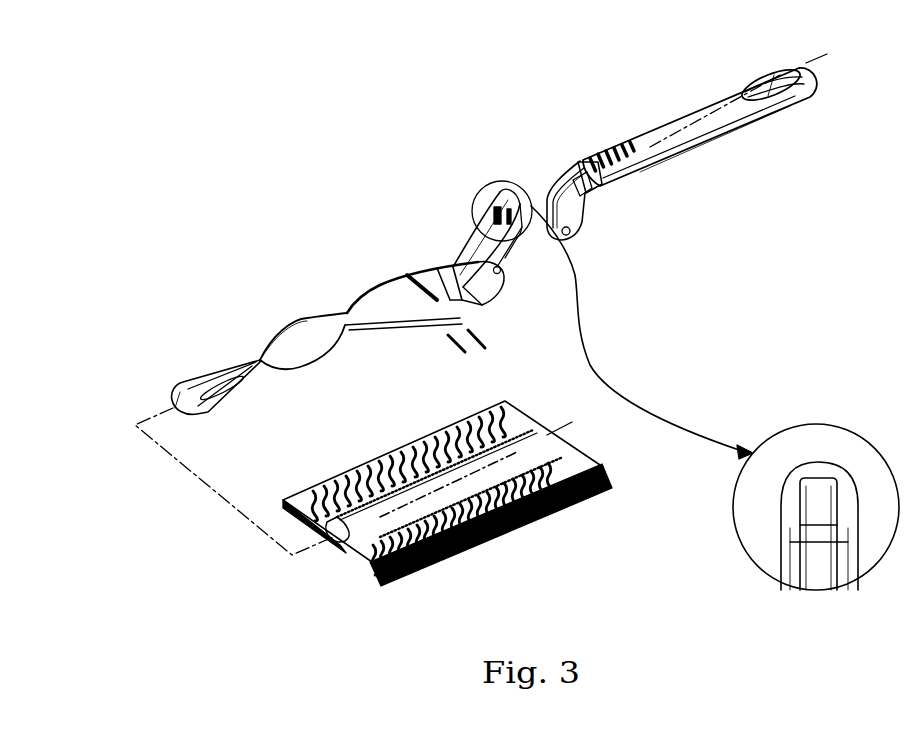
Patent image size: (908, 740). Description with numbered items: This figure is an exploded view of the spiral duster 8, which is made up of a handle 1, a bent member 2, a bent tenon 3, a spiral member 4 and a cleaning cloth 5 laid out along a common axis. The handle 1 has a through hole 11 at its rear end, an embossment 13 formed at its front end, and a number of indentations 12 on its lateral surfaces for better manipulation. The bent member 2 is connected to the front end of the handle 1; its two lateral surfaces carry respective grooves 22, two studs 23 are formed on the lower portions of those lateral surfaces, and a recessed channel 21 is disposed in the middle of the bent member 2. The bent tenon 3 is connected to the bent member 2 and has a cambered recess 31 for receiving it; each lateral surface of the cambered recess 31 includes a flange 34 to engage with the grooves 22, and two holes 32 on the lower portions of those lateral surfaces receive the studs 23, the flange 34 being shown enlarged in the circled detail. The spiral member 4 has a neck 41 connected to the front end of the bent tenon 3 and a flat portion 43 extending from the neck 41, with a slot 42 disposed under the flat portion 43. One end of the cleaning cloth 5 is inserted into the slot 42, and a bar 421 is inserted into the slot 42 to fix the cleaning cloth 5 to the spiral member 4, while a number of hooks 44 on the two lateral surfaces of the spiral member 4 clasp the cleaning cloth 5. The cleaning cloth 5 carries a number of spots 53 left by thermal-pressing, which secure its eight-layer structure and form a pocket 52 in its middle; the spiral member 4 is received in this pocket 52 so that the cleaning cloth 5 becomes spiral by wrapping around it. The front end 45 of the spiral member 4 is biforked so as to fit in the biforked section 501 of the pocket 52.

The handle 1 is at (703, 105).
The through hole 11 is at (765, 75).
The indentations 12 is at (677, 158).
The embossment 13 is at (610, 146).
The bent member 2 is at (593, 200).
The recessed channel 21 is at (559, 188).
The grooves 22 is at (590, 196).
The studs 23 is at (571, 238).
The bent tenon 3 is at (667, 374).
The cambered recess 31 is at (480, 247).
The holes 32 is at (500, 273).
The flange 34 is at (521, 229).
The spiral member 4 is at (349, 310).
The neck 41 is at (444, 266).
The slot 42 is at (451, 311).
The bar 421 is at (488, 350).
The flat portion 43 is at (420, 330).
The hooks 44 is at (405, 276).
The front end 45 is at (183, 387).
The cleaning cloth 5 is at (447, 504).
The biforked section 501 is at (335, 540).
The pocket 52 is at (540, 515).
The spots 53 is at (457, 550).
The spiral duster 8 is at (230, 158).